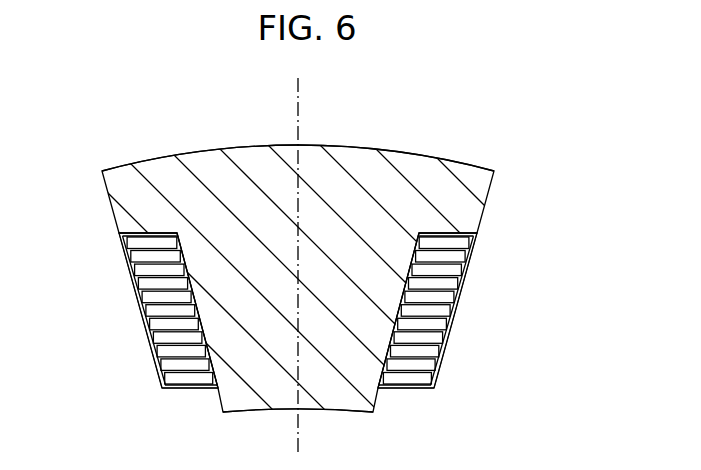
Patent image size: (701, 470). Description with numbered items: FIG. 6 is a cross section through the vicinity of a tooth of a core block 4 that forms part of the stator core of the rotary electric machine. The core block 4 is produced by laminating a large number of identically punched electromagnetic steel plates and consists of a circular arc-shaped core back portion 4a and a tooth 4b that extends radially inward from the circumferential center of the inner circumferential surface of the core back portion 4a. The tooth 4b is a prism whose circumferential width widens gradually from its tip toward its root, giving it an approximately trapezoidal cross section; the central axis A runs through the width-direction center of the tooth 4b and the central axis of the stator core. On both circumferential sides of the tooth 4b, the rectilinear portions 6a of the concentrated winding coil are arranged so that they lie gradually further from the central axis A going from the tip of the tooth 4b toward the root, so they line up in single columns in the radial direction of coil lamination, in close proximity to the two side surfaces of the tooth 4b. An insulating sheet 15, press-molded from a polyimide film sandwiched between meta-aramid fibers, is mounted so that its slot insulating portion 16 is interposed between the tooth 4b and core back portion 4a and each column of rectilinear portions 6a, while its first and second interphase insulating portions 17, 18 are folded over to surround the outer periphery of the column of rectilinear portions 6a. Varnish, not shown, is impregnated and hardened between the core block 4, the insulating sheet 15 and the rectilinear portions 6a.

The core block 4 is at (472, 163).
The core back portion 4a is at (425, 183).
The tooth 4b is at (345, 397).
The rectilinear portions 6a is at (158, 307).
The insulating sheet 15 is at (146, 333).
The slot insulating portion 16 is at (397, 360).
The first interphase insulating portion 17 is at (153, 360).
The second interphase insulating portion 18 is at (128, 268).
The central axis A is at (310, 117).